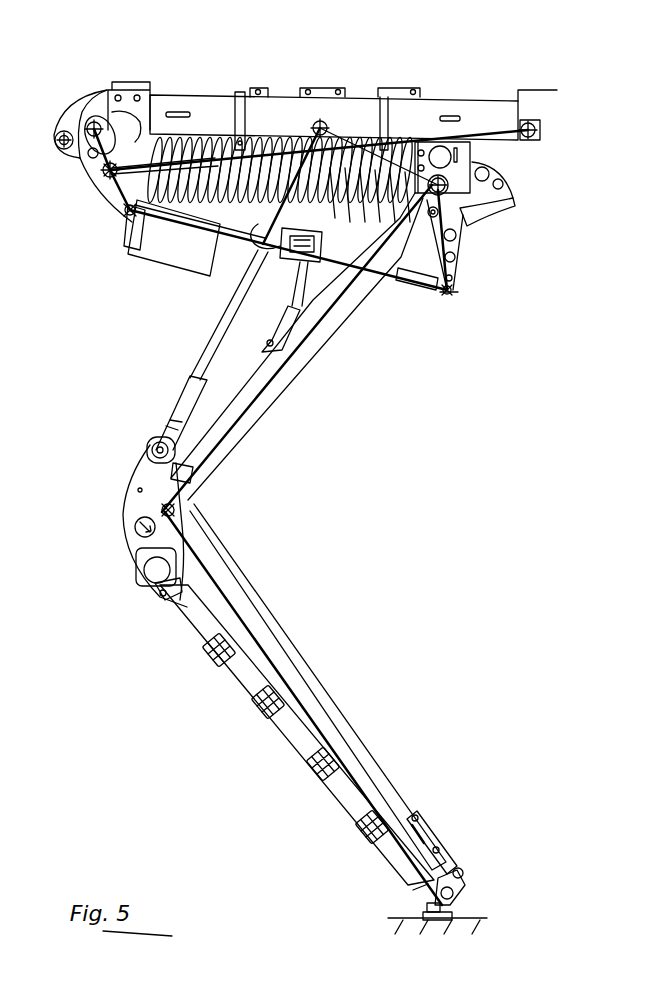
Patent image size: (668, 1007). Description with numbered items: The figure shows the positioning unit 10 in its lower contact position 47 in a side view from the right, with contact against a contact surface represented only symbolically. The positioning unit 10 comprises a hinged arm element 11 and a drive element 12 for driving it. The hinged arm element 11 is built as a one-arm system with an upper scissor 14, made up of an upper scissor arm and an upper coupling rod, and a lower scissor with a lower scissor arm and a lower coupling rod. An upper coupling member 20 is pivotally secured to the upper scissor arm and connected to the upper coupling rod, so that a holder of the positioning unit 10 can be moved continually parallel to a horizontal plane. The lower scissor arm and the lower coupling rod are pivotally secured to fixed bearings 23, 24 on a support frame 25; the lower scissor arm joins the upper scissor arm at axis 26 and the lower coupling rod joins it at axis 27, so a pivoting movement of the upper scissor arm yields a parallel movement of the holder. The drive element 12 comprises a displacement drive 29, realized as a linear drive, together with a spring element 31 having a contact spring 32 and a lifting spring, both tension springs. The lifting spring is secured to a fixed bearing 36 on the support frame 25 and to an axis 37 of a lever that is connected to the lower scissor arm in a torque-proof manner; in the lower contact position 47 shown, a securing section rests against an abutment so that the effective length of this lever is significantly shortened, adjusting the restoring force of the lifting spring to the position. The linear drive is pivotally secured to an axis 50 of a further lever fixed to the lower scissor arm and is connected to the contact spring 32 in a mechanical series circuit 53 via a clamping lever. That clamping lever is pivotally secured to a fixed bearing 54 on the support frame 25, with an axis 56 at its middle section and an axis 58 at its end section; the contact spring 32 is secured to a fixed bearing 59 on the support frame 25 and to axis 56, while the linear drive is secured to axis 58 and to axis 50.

The positioning unit 10 is at (583, 128).
The hinged arm element 11 is at (463, 478).
The drive element 12 is at (184, 276).
The upper scissor 14 is at (6, 472).
The upper coupling member 20 is at (466, 886).
The fixed bearing 23 is at (447, 174).
The fixed bearing 24 is at (322, 127).
The support frame 25 is at (205, 105).
The axis 26 is at (150, 526).
The axis 27 is at (157, 444).
The displacement drive 29 is at (162, 266).
The spring element 31 is at (528, 199).
The contact spring 32 is at (257, 127).
The fixed bearing 36 is at (60, 150).
The axis 37 is at (513, 198).
The lower contact position 47 is at (578, 183).
The axis 50 is at (448, 300).
The mechanical series circuit 53 is at (98, 244).
The fixed bearing 54 is at (96, 122).
The axis 56 is at (102, 188).
The axis 58 is at (128, 216).
The fixed bearing 59 is at (533, 138).